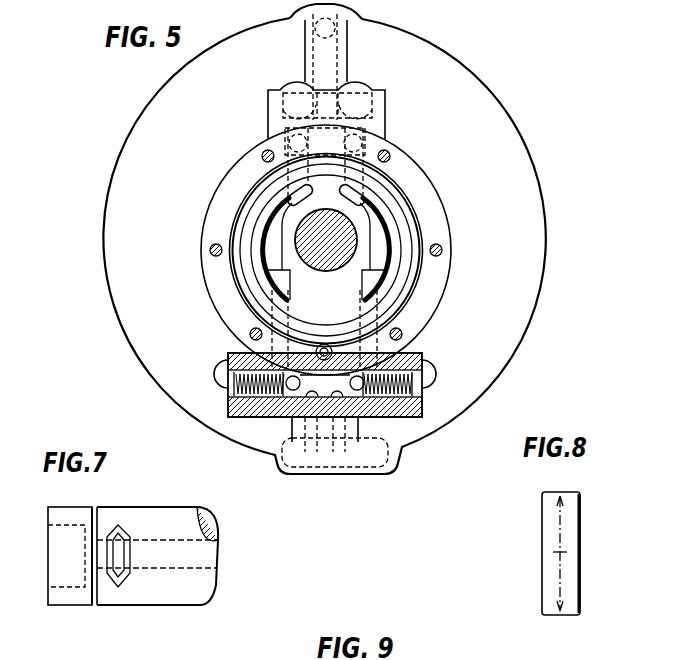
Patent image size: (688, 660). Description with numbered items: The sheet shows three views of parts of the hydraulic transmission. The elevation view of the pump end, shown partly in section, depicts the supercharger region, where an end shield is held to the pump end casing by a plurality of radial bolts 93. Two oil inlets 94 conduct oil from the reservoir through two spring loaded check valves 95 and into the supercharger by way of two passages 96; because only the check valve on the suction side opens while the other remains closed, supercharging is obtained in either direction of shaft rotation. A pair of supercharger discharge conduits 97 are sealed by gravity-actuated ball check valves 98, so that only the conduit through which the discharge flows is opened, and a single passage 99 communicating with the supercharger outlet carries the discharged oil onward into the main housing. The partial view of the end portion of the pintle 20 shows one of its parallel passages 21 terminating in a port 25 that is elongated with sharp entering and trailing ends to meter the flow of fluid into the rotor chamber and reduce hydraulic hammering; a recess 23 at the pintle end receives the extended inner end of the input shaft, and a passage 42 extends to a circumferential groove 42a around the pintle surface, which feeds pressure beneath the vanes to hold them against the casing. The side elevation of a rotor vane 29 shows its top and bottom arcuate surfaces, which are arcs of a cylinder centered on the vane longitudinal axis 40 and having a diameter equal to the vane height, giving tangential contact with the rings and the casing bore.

In FIG. 5, the radial bolts 93 is at (390, 154).
In FIG. 5, the oil inlets 94 is at (340, 452).
In FIG. 5, the spring loaded check valves 95 is at (322, 373).
In FIG. 5, the passages 96 is at (378, 310).
In FIG. 5, the supercharger discharge conduits 97 is at (362, 173).
In FIG. 5, the gravity-actuated ball check valves 98 is at (325, 140).
In FIG. 5, the single passage 99 is at (328, 58).
In FIG. 7, the pintle 20 is at (145, 517).
In FIG. 7, the passage 21 is at (177, 560).
In FIG. 7, the recess 23 is at (65, 527).
In FIG. 7, the port 25 is at (125, 580).
In FIG. 7, the passage 42 is at (93, 557).
In FIG. 7, the circumferential groove 42a is at (97, 592).
In FIG. 8, the rotor vane 29 is at (568, 589).
In FIG. 8, the vane longitudinal axis 40 is at (566, 551).